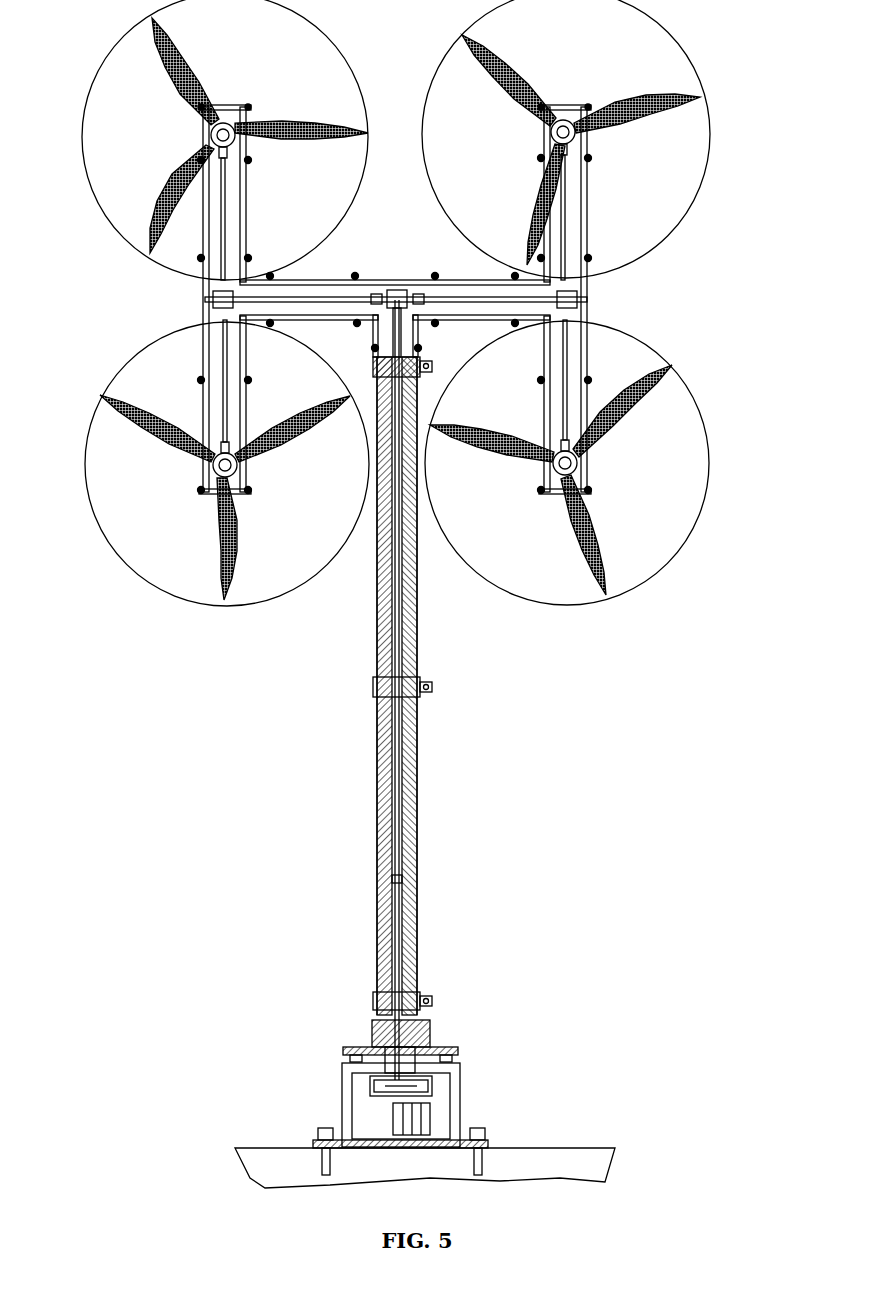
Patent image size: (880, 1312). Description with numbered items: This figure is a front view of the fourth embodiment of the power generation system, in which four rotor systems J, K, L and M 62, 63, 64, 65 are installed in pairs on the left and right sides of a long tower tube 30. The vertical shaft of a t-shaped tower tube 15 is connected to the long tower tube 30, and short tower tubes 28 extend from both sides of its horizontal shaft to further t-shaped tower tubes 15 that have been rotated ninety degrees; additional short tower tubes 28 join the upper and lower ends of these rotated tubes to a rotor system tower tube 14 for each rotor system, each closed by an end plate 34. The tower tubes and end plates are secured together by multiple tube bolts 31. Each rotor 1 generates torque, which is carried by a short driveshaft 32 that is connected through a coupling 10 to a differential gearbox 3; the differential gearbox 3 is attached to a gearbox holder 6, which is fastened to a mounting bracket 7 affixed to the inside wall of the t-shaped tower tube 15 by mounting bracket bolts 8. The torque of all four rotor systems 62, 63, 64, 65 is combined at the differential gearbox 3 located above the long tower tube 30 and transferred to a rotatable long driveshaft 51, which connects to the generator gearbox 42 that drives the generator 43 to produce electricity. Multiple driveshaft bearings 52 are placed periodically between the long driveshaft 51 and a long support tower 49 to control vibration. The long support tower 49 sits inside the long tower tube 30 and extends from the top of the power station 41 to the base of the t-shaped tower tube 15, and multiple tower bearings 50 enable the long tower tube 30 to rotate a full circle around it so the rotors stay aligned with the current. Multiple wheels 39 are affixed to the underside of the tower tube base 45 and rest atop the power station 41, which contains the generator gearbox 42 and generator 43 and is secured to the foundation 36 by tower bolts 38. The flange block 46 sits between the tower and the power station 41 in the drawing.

The rotor 1 is at (188, 85).
The differential gearbox 3 is at (390, 292).
The gearbox holder 6 is at (400, 290).
The mounting bracket 7 is at (385, 293).
The mounting bracket bolts 8 is at (410, 298).
The coupling 10 is at (244, 160).
The rotor system tower tube 14 is at (210, 137).
The t-shaped tower tube 15 is at (380, 295).
The short tower tube 28 is at (200, 188).
The long tower tube 30 is at (418, 752).
The tube bolts 31 is at (248, 108).
The short driveshaft 32 is at (226, 218).
The end plate 34 is at (228, 105).
The foundation 36 is at (600, 1150).
The tower bolts 38 is at (318, 1135).
The wheels 39 is at (343, 1051).
The power station 41 is at (345, 1110).
The generator gearbox 42 is at (432, 1088).
The generator 43 is at (430, 1118).
The tower tube base 45 is at (372, 1035).
The flange block 46 is at (372, 1022).
The long support tower 49 is at (378, 645).
The tower bearings 50 is at (432, 366).
The long driveshaft 51 is at (412, 580).
The driveshaft bearings 52 is at (392, 540).
The rotor system J 62 is at (125, 240).
The rotor system K 63 is at (140, 580).
The rotor system L 64 is at (700, 198).
The rotor system M 65 is at (700, 545).